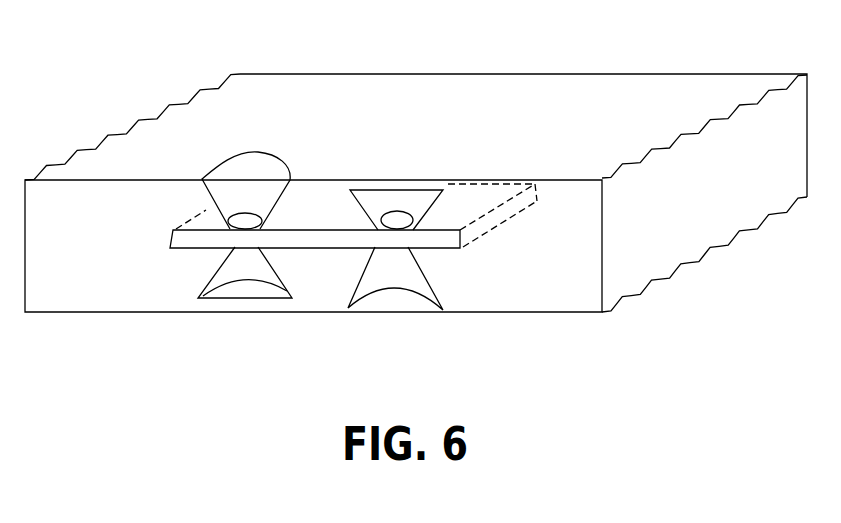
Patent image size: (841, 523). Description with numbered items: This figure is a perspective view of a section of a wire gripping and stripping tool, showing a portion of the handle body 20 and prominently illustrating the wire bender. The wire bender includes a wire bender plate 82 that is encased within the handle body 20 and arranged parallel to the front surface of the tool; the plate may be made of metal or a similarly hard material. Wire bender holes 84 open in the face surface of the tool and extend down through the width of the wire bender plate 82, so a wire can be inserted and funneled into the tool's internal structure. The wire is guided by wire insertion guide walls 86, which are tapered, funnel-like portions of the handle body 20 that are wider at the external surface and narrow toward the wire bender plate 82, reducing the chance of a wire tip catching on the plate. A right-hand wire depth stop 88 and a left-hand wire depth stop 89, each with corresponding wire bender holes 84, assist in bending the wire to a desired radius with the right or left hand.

The handle body 20 is at (434, 74).
The wire bender plate 82 is at (503, 220).
The wire bender holes 84 is at (246, 211).
The wire insertion guide walls 86 is at (290, 195).
The right-hand wire depth stop 88 is at (236, 299).
The left-hand wire depth stop 89 is at (398, 179).